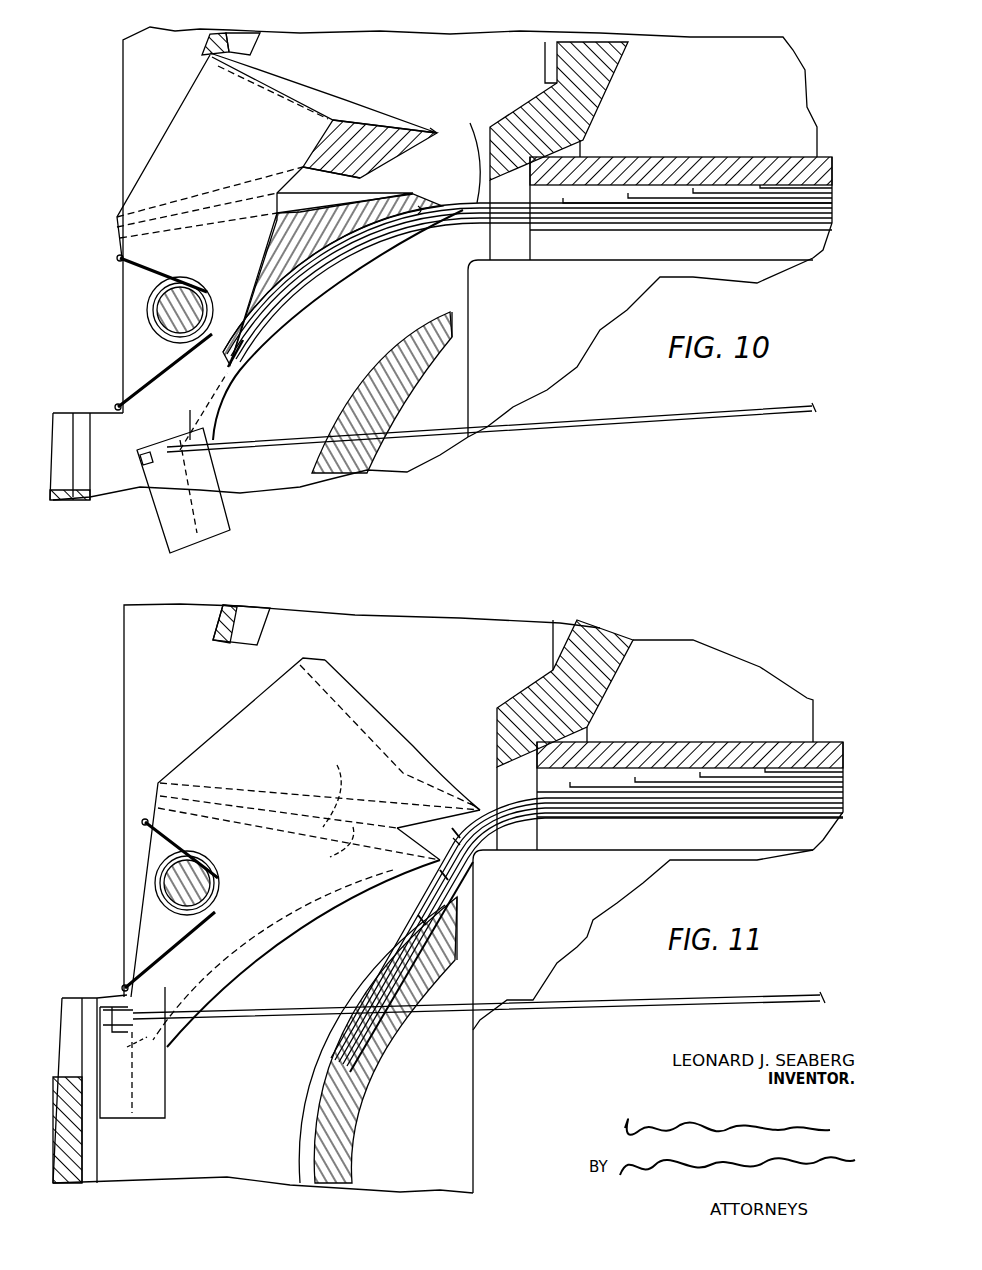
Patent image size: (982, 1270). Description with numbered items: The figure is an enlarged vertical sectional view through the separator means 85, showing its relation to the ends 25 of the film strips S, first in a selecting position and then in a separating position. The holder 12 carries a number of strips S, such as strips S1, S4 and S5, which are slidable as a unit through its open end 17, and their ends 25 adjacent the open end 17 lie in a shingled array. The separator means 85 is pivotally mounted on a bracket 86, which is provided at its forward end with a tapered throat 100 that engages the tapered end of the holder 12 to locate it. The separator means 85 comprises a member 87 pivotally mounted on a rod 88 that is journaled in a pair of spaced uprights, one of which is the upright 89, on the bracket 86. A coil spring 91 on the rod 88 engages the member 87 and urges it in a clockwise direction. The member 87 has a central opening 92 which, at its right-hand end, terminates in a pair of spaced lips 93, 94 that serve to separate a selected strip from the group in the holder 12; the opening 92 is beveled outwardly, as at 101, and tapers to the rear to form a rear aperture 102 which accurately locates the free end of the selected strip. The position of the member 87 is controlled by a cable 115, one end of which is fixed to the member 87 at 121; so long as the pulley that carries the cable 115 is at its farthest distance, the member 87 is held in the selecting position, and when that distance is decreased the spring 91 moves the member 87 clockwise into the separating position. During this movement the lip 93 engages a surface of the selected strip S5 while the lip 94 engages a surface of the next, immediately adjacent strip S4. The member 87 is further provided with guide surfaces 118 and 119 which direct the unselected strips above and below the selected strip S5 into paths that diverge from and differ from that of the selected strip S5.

In FIG. 10, the holder 12 is at (712, 157).
In FIG. 11, the holder 12 is at (705, 742).
In FIG. 10, the open end 17 is at (523, 235).
In FIG. 11, the open end 17 is at (533, 830).
In FIG. 10, the ends of the strips 25 is at (397, 253).
In FIG. 11, the ends of the strips 25 is at (462, 870).
In FIG. 10, the separator means 85 is at (151, 50).
In FIG. 11, the separator means 85 is at (165, 745).
In FIG. 10, the bracket 86 is at (407, 447).
In FIG. 11, the bracket 86 is at (390, 1063).
In FIG. 10, the member 87 is at (168, 158).
In FIG. 11, the member 87 is at (248, 715).
In FIG. 10, the rod 88 is at (180, 310).
In FIG. 11, the rod 88 is at (165, 886).
In FIG. 10, the upright 89 is at (140, 117).
In FIG. 11, the upright 89 is at (148, 668).
In FIG. 10, the coil spring 91 is at (177, 355).
In FIG. 11, the coil spring 91 is at (165, 852).
In FIG. 10, the central opening 92 is at (362, 178).
In FIG. 11, the central opening 92 is at (350, 843).
In FIG. 10, the lip 93 is at (423, 130).
In FIG. 11, the lip 93 is at (480, 805).
In FIG. 10, the lip 94 is at (413, 193).
In FIG. 11, the lip 94 is at (383, 900).
In FIG. 10, the tapered throat 100 is at (570, 155).
In FIG. 11, the tapered throat 100 is at (580, 735).
In FIG. 10, the outward bevel 101 is at (417, 136).
In FIG. 11, the outward bevel 101 is at (326, 787).
In FIG. 10, the rear aperture 102 is at (117, 227).
In FIG. 11, the rear aperture 102 is at (145, 790).
In FIG. 10, the cable 115 is at (520, 425).
In FIG. 11, the cable 115 is at (550, 1000).
In FIG. 10, the guide surface 118 is at (357, 120).
In FIG. 11, the guide surface 118 is at (357, 720).
In FIG. 10, the guide surface 119 is at (258, 343).
In FIG. 11, the guide surface 119 is at (273, 927).
In FIG. 10, the cable attachment point 121 is at (163, 453).
In FIG. 11, the cable attachment point 121 is at (120, 1027).
In FIG. 10, the film strips S is at (758, 213).
In FIG. 11, the film strips S is at (730, 795).
In FIG. 10, the first sheet S1 is at (270, 307).
In FIG. 11, the first sheet S1 is at (333, 1043).
In FIG. 10, the adjacent strip S4 is at (420, 212).
In FIG. 11, the adjacent strip S4 is at (460, 845).
In FIG. 10, the selected strip S5 is at (477, 152).
In FIG. 11, the selected strip S5 is at (480, 813).